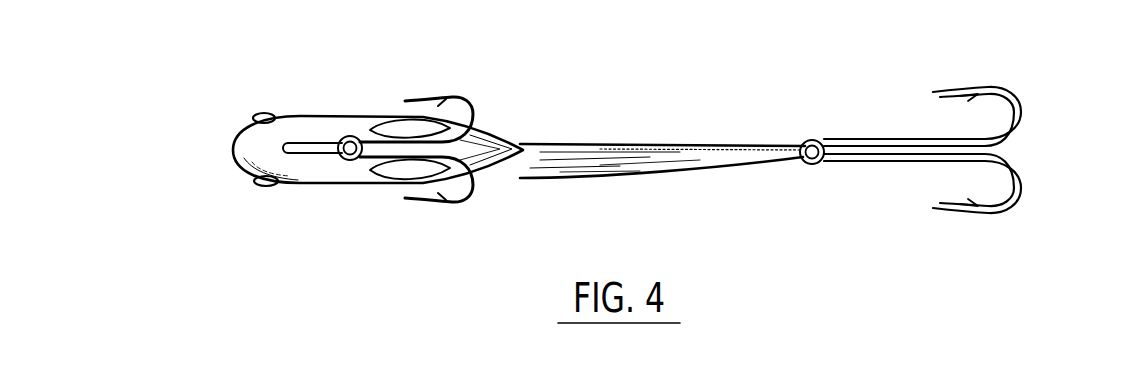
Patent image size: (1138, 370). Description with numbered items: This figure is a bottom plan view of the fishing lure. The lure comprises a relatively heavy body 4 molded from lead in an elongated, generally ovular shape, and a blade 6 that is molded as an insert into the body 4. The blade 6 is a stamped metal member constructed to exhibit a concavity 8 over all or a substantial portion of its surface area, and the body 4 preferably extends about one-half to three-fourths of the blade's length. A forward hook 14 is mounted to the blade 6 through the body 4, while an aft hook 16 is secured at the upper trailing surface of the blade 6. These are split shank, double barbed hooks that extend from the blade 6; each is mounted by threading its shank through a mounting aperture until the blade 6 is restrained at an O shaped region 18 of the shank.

The body 4 is at (232, 157).
The blade 6 is at (670, 172).
The concavity 8 is at (615, 144).
The forward hook 14 is at (468, 98).
The aft hook 16 is at (1022, 110).
The O shaped region 18 is at (354, 158).